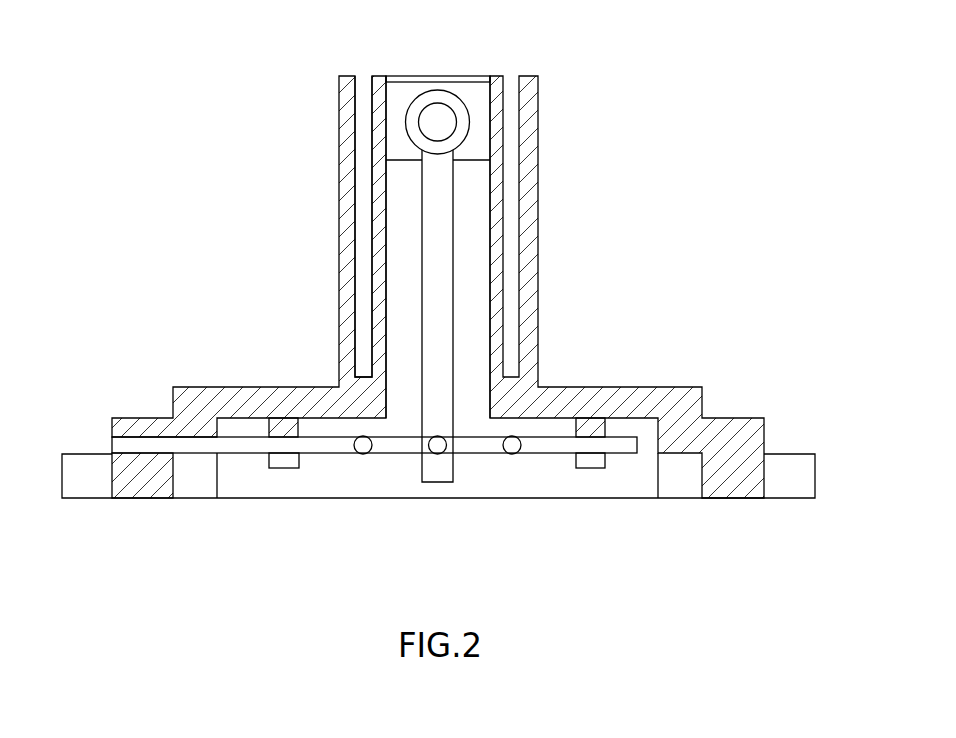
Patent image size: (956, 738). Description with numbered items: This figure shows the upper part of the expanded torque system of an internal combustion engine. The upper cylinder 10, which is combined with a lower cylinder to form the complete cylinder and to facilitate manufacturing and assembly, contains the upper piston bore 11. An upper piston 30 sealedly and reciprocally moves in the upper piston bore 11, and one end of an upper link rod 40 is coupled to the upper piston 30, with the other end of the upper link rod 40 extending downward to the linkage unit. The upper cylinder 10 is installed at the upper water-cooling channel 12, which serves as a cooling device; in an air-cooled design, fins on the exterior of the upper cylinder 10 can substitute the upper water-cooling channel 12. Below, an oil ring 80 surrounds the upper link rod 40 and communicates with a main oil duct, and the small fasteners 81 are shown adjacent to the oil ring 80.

The upper cylinder 10 is at (556, 300).
The upper piston bore 11 is at (386, 350).
The upper water-cooling channel 12 is at (366, 140).
The upper piston 30 is at (466, 91).
The upper link rod 40 is at (426, 233).
The oil ring 80 is at (395, 456).
The fastener 81 is at (285, 461).